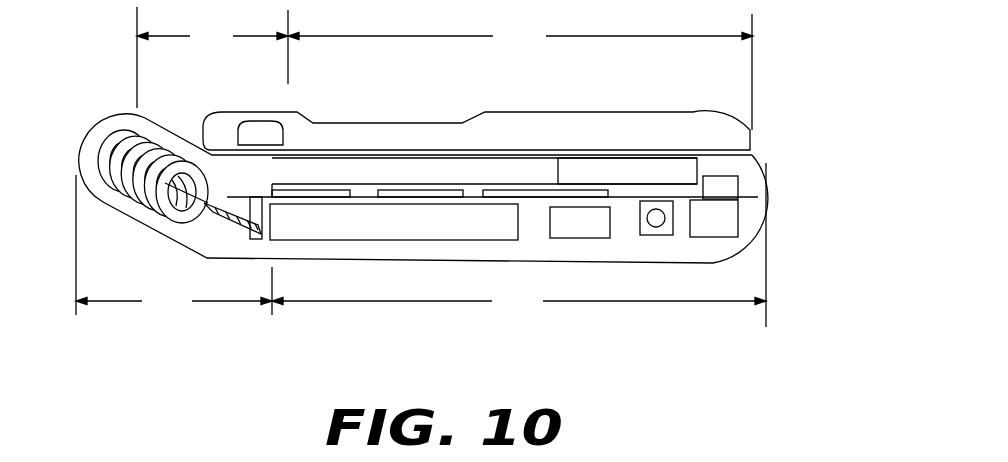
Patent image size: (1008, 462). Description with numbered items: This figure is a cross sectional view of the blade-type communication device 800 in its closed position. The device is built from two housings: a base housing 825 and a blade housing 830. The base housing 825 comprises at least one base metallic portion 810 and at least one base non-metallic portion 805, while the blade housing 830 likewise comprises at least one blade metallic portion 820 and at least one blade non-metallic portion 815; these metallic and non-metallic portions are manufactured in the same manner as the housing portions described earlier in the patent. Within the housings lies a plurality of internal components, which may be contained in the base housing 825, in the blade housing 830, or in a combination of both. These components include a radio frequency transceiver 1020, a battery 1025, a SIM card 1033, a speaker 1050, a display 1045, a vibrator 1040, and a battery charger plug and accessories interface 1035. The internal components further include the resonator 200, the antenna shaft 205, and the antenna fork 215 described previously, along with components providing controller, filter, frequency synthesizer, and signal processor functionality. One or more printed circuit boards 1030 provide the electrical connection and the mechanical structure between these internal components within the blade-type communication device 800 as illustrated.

The resonator 200 is at (110, 145).
The antenna shaft 205 is at (217, 218).
The antenna fork 215 is at (260, 212).
The blade-type communication device 800 is at (240, 347).
The base non-metallic portion 805 is at (174, 245).
The base metallic portion 810 is at (519, 245).
The blade non-metallic portion 815 is at (212, 57).
The blade metallic portion 820 is at (520, 72).
The base housing 825 is at (748, 228).
The blade housing 830 is at (485, 122).
The radio frequency (RF) transceiver 1020 is at (345, 195).
The battery 1025 is at (358, 228).
The printed circuit board 1030 is at (747, 203).
The SIM card 1033 is at (583, 232).
The battery charger plug and accessories interface 1035 is at (700, 228).
The vibrator 1040 is at (733, 183).
The display 1045 is at (637, 172).
The speaker 1050 is at (277, 111).